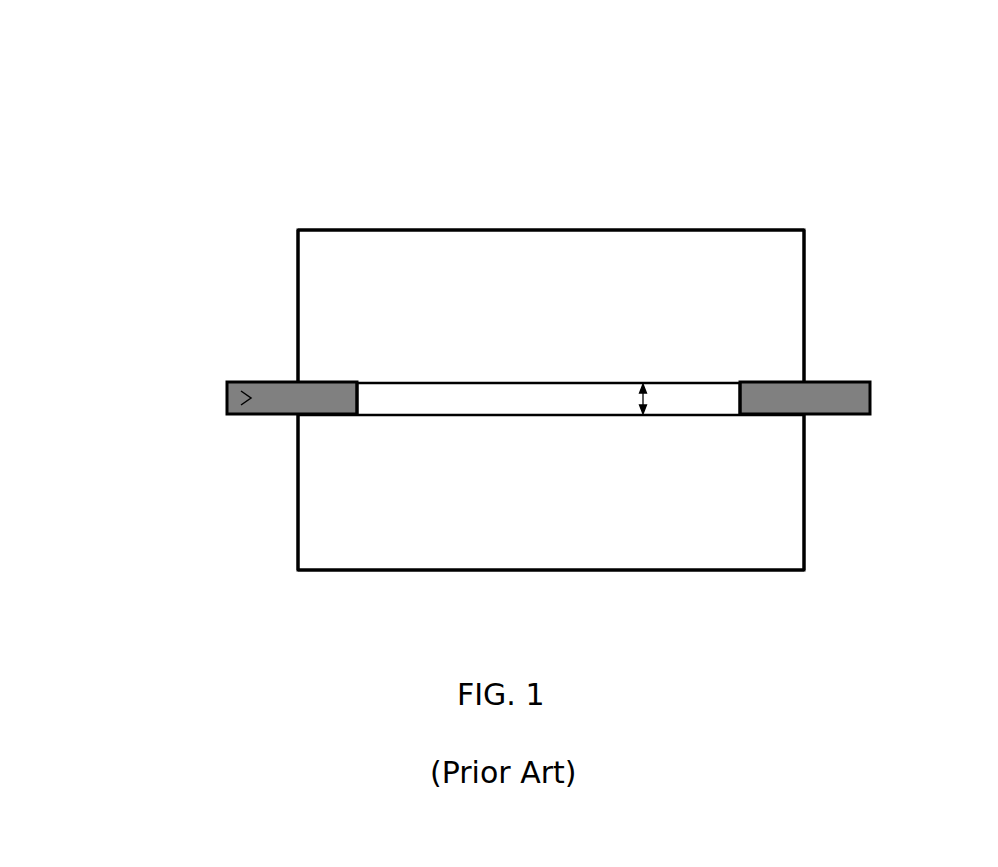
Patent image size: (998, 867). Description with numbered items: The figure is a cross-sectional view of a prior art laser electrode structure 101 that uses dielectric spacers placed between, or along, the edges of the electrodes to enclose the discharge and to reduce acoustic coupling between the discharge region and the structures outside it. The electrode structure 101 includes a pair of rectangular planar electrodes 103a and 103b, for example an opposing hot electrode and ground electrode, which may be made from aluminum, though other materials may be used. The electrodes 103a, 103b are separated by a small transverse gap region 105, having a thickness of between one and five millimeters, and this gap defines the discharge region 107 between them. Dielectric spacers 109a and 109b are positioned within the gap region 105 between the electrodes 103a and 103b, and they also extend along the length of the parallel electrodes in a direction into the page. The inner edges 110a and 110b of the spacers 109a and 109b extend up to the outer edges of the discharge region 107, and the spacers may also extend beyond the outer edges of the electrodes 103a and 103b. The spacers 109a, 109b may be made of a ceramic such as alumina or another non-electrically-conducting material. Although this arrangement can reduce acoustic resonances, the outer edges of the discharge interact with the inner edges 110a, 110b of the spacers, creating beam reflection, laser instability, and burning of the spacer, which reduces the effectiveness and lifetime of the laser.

The electrode structure 101 is at (786, 151).
The rectangular planar electrode 103a is at (412, 267).
The rectangular planar electrode 103b is at (330, 548).
The transverse gap region 105 is at (646, 398).
The discharge region 107 is at (533, 388).
The dielectric spacer 109a is at (227, 398).
The dielectric spacer 109b is at (870, 398).
The inner edge of spacer 110a is at (358, 398).
The inner edge of spacer 110b is at (740, 398).